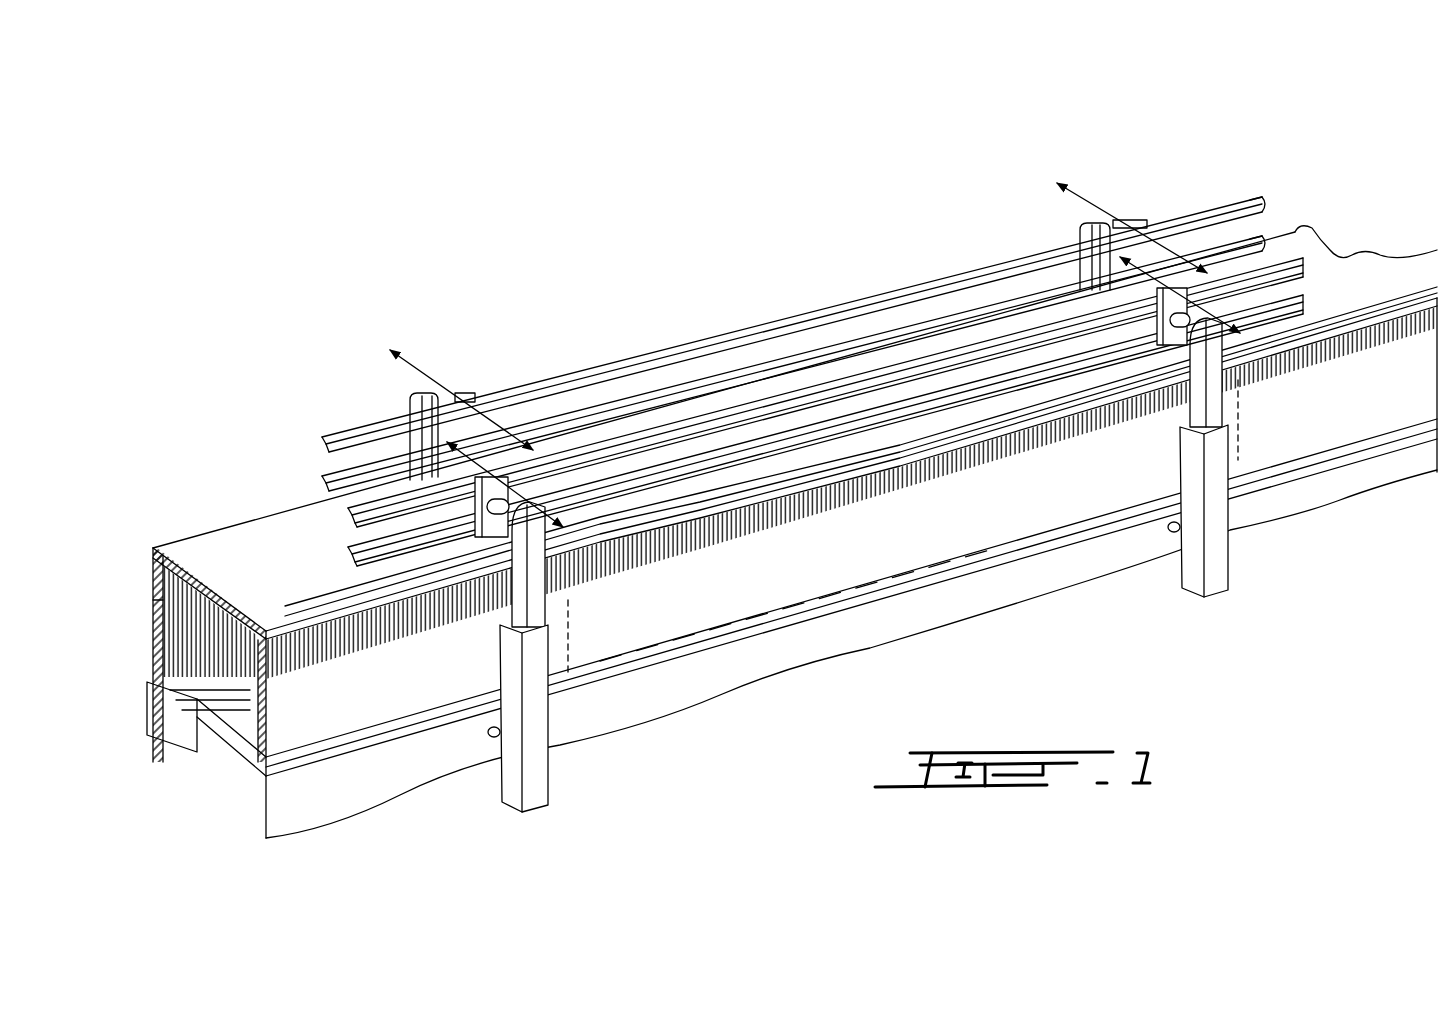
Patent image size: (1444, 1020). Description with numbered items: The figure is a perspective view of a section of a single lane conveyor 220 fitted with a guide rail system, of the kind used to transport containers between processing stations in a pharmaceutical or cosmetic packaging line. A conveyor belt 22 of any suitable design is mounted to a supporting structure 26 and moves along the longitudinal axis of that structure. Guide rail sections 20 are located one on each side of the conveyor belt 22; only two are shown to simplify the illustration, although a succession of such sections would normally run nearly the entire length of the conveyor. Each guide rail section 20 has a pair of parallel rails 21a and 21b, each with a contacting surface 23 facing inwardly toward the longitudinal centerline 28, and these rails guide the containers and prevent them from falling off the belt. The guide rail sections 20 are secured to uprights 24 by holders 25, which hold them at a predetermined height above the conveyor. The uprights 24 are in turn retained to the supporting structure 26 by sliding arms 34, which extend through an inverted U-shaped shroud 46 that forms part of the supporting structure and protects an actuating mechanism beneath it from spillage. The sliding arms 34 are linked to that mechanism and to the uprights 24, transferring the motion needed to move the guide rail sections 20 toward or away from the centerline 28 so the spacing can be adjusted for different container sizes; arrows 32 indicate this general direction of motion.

The single lane conveyor 220 is at (230, 503).
The conveyor belt 22 is at (257, 530).
The longitudinal centerline 28 is at (147, 603).
The inverted U-shaped shroud 46 is at (157, 602).
The supporting structure 26 is at (238, 722).
The upright 24 is at (534, 730).
The holder 25 is at (497, 514).
The arrow 32 is at (413, 363).
The guide rail section 20 is at (628, 358).
The rail 21a is at (705, 340).
The rail 21b is at (790, 350).
The contacting surface 23 is at (1222, 220).
The sliding arm 34 is at (491, 737).